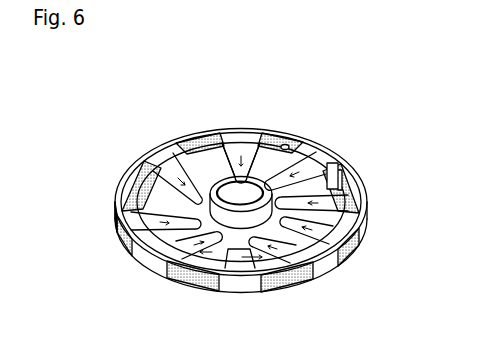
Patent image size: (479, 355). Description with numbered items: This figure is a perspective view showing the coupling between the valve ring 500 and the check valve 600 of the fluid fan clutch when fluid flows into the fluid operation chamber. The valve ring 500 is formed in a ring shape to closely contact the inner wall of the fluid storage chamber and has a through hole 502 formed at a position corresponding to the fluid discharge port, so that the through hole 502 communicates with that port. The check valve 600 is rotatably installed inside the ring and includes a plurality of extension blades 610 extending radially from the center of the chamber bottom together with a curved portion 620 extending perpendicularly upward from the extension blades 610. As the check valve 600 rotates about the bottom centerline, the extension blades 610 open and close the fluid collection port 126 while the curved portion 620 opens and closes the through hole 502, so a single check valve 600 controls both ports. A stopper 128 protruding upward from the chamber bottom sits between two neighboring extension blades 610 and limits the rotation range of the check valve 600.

The valve ring 500 is at (117, 202).
The through hole 502 is at (288, 146).
The check valve 600 is at (260, 218).
The extension blades 610 is at (233, 154).
The curved portion 620 is at (240, 128).
The stopper 128 is at (349, 176).
The fluid collection port 126 is at (168, 262).